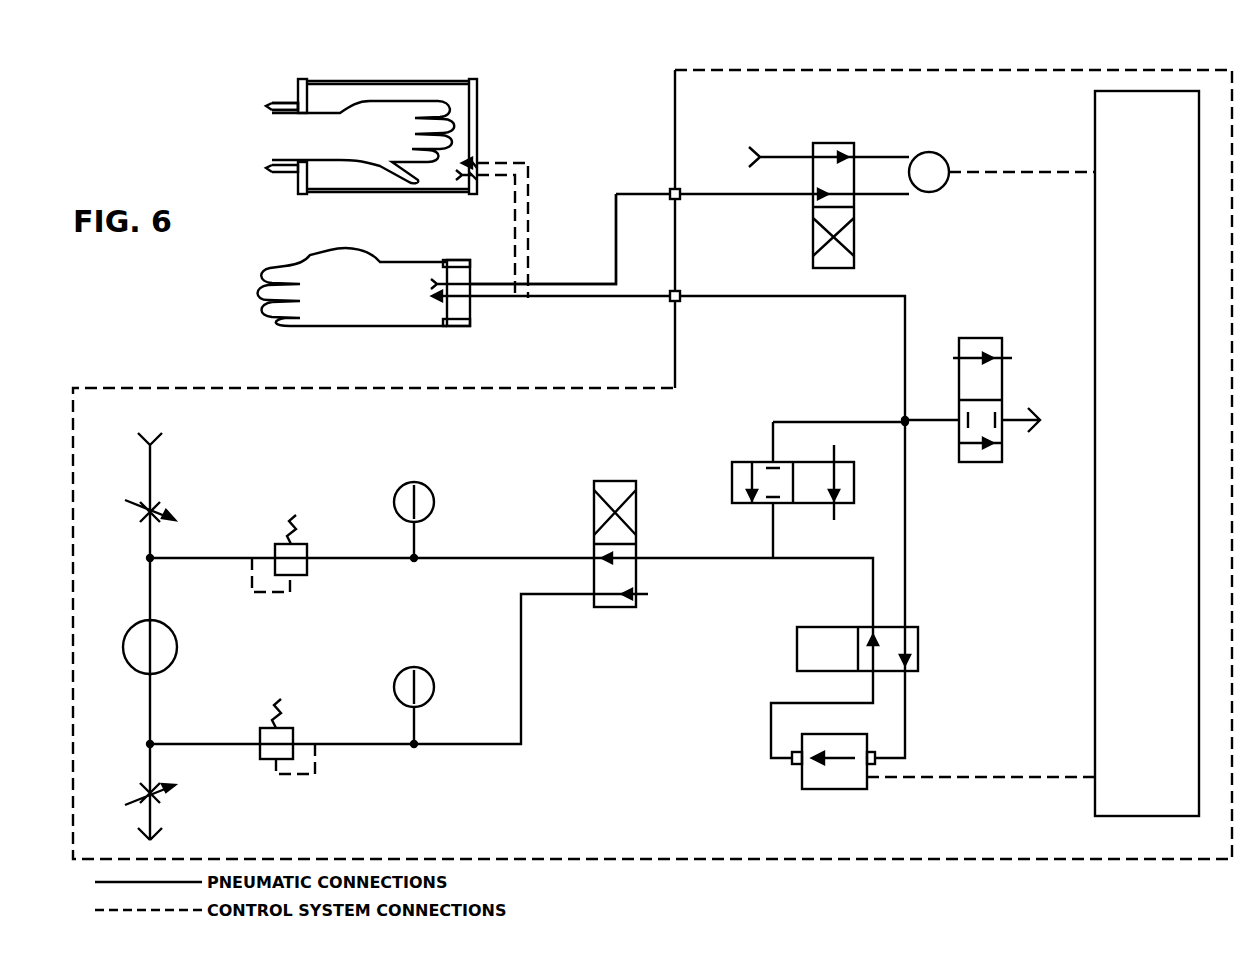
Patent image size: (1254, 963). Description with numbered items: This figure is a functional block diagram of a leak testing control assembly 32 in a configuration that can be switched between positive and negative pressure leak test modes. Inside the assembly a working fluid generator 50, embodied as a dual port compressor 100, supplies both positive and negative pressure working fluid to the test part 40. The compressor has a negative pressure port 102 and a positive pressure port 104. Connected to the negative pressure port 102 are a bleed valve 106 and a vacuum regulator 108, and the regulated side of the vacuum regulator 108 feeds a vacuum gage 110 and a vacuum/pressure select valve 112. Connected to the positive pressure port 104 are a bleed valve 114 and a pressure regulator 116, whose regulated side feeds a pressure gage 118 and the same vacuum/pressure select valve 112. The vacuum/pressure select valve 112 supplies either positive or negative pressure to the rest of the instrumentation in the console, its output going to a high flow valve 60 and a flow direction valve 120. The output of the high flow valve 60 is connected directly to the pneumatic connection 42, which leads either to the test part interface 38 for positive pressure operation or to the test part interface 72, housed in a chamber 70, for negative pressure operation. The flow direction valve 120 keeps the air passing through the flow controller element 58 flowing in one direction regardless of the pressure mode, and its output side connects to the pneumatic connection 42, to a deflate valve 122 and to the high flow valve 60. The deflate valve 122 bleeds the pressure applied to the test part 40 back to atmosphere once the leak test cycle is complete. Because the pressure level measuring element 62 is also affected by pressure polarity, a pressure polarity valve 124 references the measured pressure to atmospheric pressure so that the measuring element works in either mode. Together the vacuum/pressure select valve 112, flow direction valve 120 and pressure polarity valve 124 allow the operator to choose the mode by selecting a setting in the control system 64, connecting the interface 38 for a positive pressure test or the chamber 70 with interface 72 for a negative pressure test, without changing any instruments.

The leak testing control assembly 32 is at (675, 135).
The test part interface 38 is at (470, 270).
The test part 40 is at (355, 100).
The pneumatic connection 42 is at (578, 291).
The working fluid generator 50 is at (143, 620).
The flow controller element 58 is at (802, 776).
The high flow valve 60 is at (732, 487).
The pressure level measuring element 62 is at (943, 186).
The control system 64 is at (1095, 538).
The chamber 70 is at (480, 100).
The test part interface 72 is at (290, 105).
The dual port compressor 100 is at (168, 624).
The negative pressure port 102 is at (158, 620).
The positive pressure port 104 is at (152, 676).
The bleed valve 106 is at (143, 500).
The vacuum regulator 108 is at (307, 548).
The vacuum gage 110 is at (432, 492).
The vacuum/pressure select valve 112 is at (594, 605).
The bleed valve 114 is at (143, 782).
The pressure regulator 116 is at (293, 733).
The pressure gage 118 is at (432, 677).
The flow direction valve 120 is at (918, 645).
The deflate valve 122 is at (973, 338).
The pressure polarity valve 124 is at (813, 238).